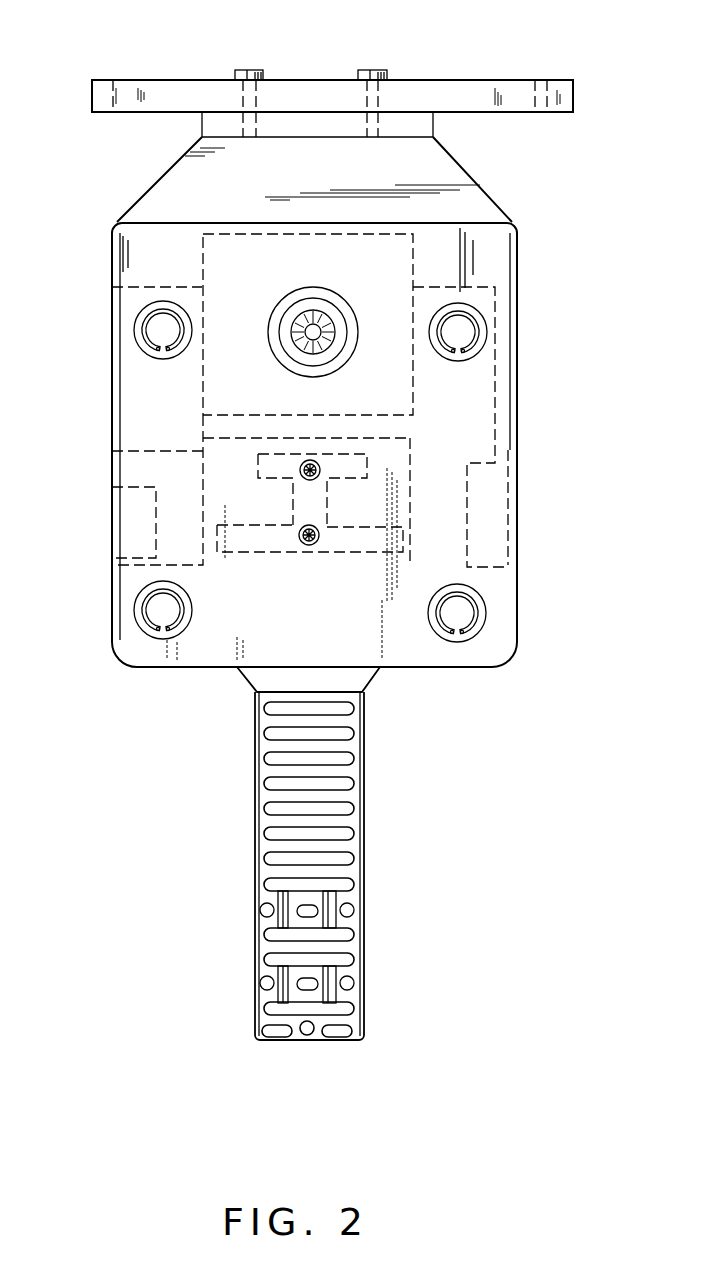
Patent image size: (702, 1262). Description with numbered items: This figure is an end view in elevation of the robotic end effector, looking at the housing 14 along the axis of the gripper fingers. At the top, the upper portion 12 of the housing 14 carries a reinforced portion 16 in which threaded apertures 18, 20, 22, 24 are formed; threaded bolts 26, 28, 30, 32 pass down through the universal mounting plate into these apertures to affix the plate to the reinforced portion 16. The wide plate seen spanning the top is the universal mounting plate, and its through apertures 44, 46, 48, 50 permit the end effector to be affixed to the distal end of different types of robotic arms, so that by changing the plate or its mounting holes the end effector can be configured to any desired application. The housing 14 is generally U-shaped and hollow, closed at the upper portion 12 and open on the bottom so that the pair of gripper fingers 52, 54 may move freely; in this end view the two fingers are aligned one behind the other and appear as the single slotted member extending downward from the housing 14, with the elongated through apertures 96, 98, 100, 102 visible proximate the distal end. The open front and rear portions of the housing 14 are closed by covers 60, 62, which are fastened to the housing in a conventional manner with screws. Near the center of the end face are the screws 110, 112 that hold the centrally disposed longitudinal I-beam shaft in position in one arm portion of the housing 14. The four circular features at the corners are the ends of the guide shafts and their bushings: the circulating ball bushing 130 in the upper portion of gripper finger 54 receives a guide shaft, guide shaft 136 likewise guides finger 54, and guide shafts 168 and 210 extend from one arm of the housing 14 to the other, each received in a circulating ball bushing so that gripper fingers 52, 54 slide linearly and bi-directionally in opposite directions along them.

The upper portion 12 is at (467, 195).
The housing 14 is at (494, 264).
The reinforced portion 16 is at (413, 125).
The threaded aperture 18 is at (252, 101).
The threaded aperture 20 is at (286, 88).
The threaded aperture 22 is at (372, 108).
The threaded aperture 24 is at (411, 92).
The threaded bolt 26 is at (242, 70).
The threaded bolt 28 is at (263, 40).
The threaded bolt 30 is at (363, 70).
The threaded bolt 32 is at (386, 40).
The through aperture 44 is at (114, 100).
The through aperture 48 is at (148, 60).
The through aperture 46 is at (537, 96).
The through aperture 50 is at (544, 67).
The gripper finger 52 is at (353, 870).
The gripper finger 54 is at (344, 853).
The cover 60 is at (112, 467).
The cover 62 is at (513, 449).
The elongated through aperture 96 is at (280, 923).
The elongated through aperture 98 is at (337, 923).
The elongated through aperture 100 is at (283, 985).
The elongated through aperture 102 is at (333, 997).
The screw 110 is at (322, 467).
The screw 112 is at (320, 528).
The circulating ball bushing 130 is at (153, 608).
The guide shaft 136 is at (463, 617).
The guide shaft 168 is at (466, 334).
The guide shaft 210 is at (158, 325).